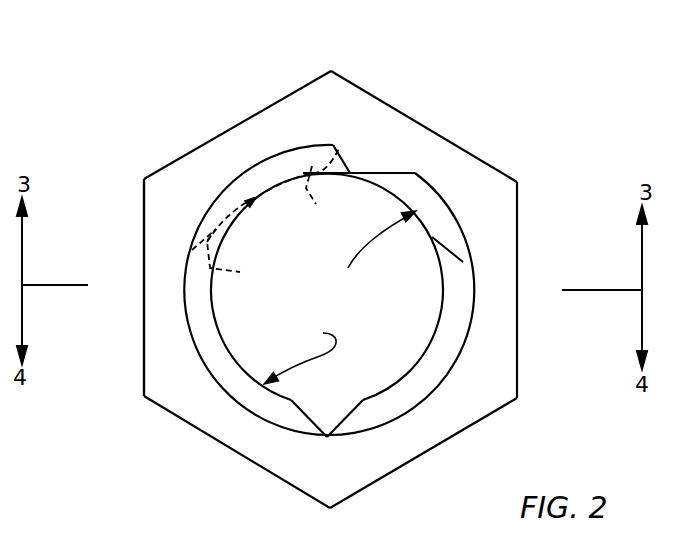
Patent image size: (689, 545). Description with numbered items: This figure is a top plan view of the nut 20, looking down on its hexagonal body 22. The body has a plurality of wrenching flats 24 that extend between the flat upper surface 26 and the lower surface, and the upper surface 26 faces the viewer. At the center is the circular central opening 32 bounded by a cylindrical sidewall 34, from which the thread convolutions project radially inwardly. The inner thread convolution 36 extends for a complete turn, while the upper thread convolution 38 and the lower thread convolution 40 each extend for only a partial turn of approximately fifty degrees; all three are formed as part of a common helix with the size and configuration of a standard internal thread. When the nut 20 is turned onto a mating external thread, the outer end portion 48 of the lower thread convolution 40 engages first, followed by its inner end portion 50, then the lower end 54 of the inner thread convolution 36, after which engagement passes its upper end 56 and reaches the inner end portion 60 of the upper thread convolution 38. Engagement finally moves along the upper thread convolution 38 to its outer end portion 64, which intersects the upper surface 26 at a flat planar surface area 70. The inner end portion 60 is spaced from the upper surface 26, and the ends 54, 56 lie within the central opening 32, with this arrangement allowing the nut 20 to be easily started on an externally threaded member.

The nut 20 is at (532, 121).
The hexagonal body 22 is at (483, 185).
The wrenching flats 24 is at (380, 101).
The upper surface 26 is at (155, 220).
The circular central opening 32 is at (346, 316).
The cylindrical sidewall 34 is at (468, 280).
The inner thread convolution 36 is at (300, 354).
The upper thread convolution 38 is at (382, 246).
The lower thread convolution 40 is at (258, 200).
The outer end portion 48 is at (327, 195).
The inner end portion 50 is at (234, 260).
The lower end 54 is at (312, 412).
The upper end 56 is at (350, 410).
The inner end portion 60 is at (454, 248).
The outer end portion 64 is at (334, 160).
The flat planar surface area 70 is at (358, 158).